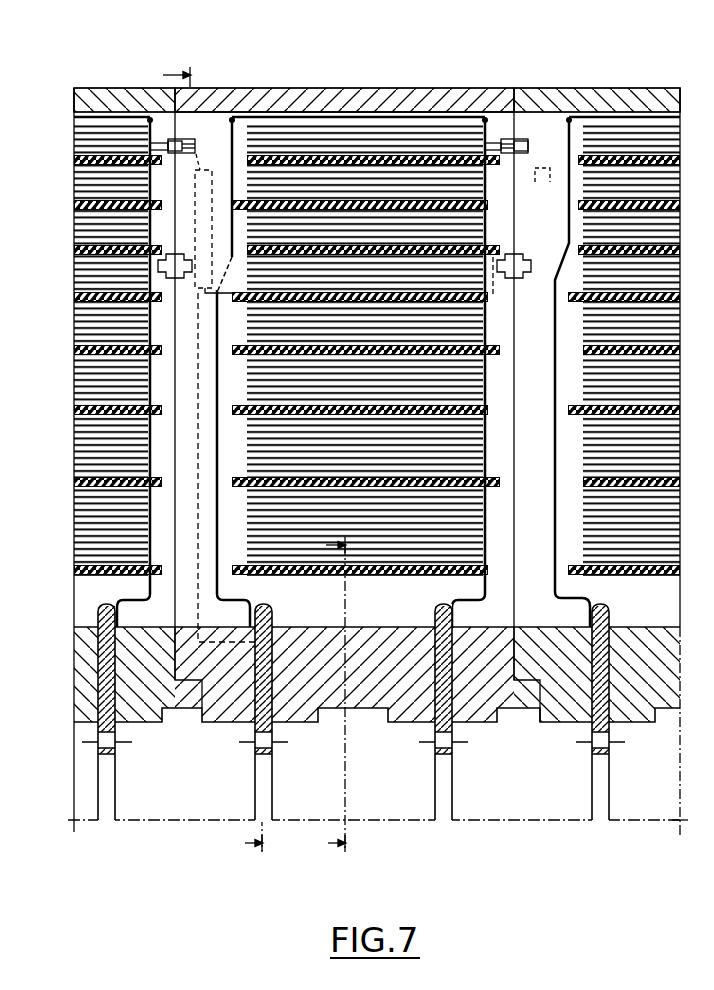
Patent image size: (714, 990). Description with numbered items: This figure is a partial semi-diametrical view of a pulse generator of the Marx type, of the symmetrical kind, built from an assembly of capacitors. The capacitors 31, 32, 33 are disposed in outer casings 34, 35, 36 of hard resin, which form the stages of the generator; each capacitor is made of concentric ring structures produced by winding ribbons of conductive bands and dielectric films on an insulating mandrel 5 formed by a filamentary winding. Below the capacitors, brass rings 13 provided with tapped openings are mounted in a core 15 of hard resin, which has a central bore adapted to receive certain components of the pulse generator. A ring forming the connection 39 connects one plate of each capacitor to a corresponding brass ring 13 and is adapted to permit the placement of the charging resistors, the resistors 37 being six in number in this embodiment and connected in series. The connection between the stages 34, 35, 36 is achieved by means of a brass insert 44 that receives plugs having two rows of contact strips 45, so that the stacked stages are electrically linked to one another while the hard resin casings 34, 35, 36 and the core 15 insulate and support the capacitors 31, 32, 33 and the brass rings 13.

The capacitor 31 is at (135, 89).
The outer casing 34 is at (101, 98).
The capacitor 32 is at (472, 66).
The capacitor 33 is at (642, 88).
The outer casing 36 is at (542, 100).
The connection ring 39 is at (233, 117).
The outer casing 35 is at (290, 95).
The charging resistor 37 is at (207, 196).
The brass insert 44 is at (194, 140).
The contact strips 45 is at (165, 145).
The insulating mandrel 5 is at (80, 571).
The core 15 is at (80, 690).
The brass ring 13 is at (115, 712).